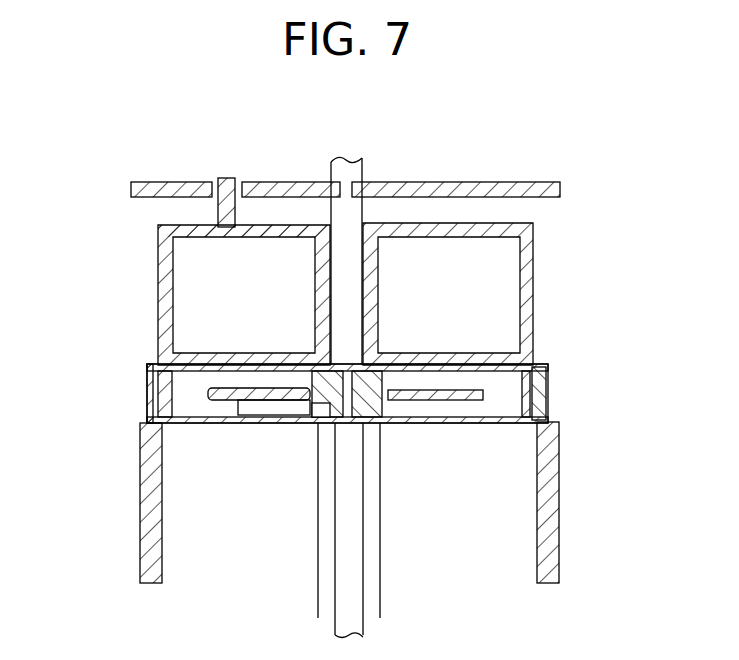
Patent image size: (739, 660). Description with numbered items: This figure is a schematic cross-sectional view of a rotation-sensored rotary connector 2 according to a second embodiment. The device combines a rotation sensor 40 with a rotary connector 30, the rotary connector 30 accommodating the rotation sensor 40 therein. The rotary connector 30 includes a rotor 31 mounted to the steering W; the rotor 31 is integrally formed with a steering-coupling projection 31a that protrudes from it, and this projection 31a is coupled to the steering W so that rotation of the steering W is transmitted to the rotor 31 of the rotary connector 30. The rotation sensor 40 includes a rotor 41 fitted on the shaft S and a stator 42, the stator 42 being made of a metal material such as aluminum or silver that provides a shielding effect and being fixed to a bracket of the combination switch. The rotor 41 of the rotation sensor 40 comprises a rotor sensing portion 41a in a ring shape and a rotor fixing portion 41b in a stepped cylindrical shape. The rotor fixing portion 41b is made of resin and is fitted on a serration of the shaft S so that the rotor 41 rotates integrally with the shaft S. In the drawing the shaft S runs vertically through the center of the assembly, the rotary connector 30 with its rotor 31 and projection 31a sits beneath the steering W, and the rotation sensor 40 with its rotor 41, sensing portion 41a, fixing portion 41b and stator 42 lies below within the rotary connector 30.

The rotation-sensored rotary connector 2 is at (470, 103).
The rotary connector 30 is at (190, 295).
The rotor 31 is at (240, 240).
The steering-coupling projection 31a is at (227, 178).
The steering W is at (507, 182).
The shaft S is at (362, 164).
The rotation sensor 40 is at (540, 372).
The rotor 41 is at (393, 425).
The rotor sensing portion 41a is at (238, 423).
The rotor fixing portion 41b is at (355, 416).
The stator 42 is at (540, 406).